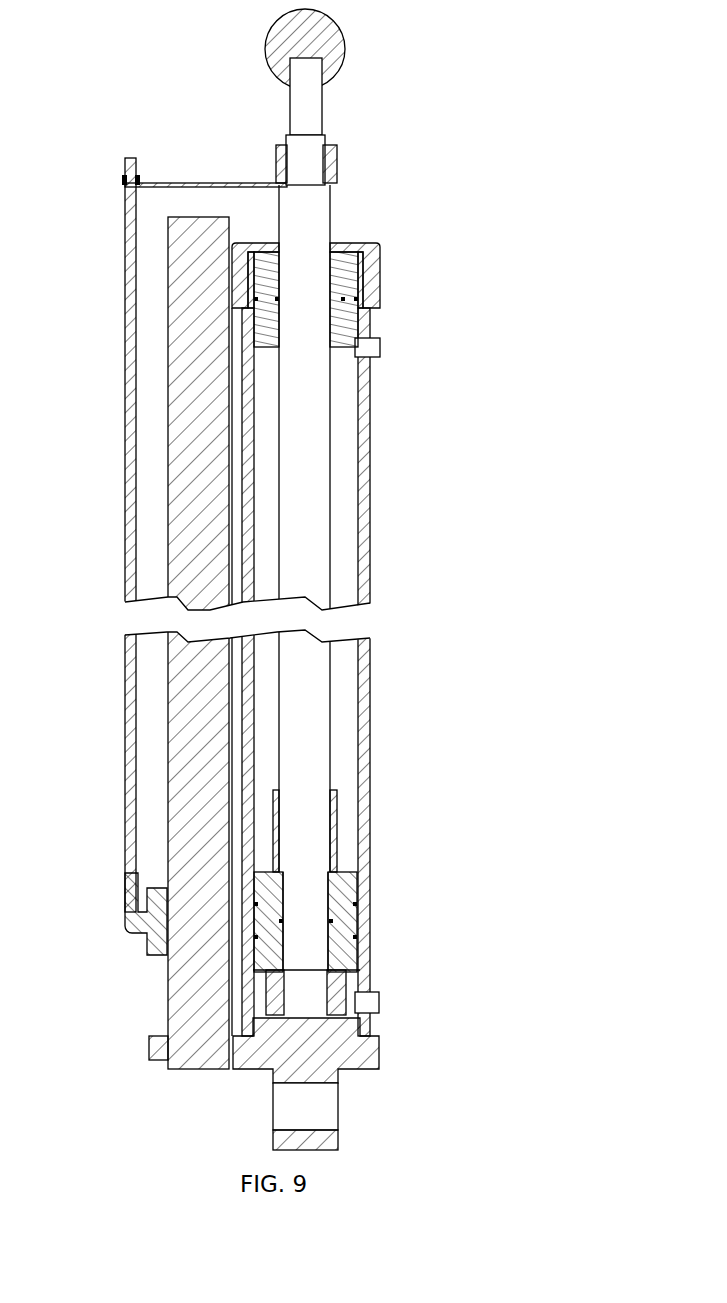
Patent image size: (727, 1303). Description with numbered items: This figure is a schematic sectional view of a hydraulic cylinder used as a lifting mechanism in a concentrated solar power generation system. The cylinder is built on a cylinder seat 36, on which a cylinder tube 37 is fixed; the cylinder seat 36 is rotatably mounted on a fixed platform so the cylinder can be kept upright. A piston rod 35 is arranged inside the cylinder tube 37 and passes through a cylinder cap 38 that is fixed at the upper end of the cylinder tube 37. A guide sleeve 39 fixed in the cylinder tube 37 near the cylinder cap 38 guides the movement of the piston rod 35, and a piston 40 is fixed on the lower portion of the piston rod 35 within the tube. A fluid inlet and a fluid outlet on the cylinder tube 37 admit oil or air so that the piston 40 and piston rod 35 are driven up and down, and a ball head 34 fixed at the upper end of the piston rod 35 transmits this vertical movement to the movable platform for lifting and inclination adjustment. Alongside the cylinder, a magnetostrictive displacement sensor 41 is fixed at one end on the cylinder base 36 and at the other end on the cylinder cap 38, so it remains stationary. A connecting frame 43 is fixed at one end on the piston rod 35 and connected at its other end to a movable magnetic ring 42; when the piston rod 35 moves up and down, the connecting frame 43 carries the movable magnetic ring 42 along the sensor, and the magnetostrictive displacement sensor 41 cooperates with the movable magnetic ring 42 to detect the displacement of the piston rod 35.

The ball head 34 is at (328, 50).
The piston rod 35 is at (310, 214).
The cylinder seat 36 is at (370, 1037).
The cylinder tube 37 is at (362, 438).
The cylinder cap 38 is at (375, 278).
The guide sleeve 39 is at (343, 313).
The piston 40 is at (340, 900).
The magnetostrictive displacement sensor 41 is at (198, 510).
The movable magnetic ring 42 is at (162, 900).
The connecting frame 43 is at (127, 193).